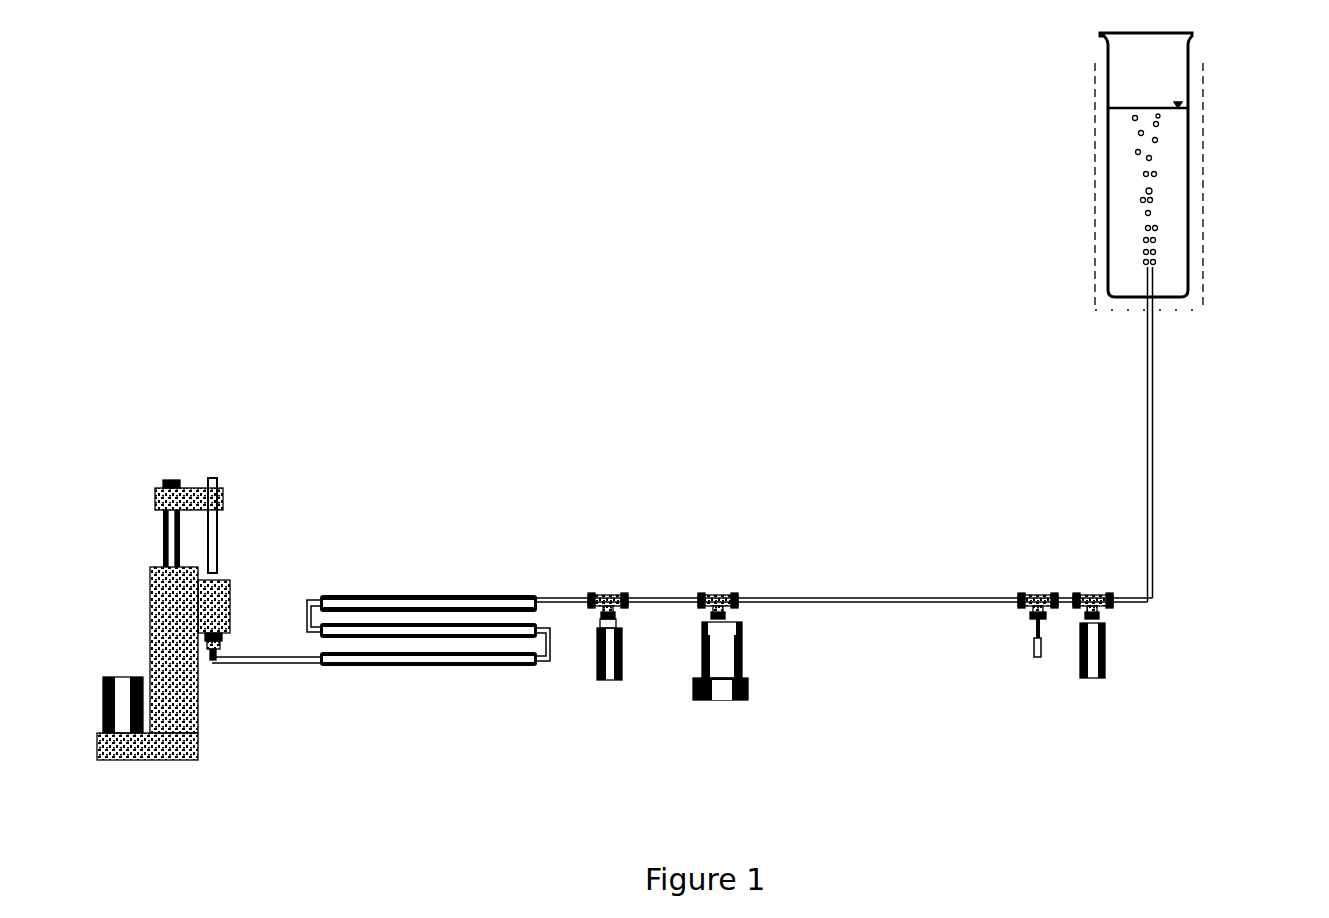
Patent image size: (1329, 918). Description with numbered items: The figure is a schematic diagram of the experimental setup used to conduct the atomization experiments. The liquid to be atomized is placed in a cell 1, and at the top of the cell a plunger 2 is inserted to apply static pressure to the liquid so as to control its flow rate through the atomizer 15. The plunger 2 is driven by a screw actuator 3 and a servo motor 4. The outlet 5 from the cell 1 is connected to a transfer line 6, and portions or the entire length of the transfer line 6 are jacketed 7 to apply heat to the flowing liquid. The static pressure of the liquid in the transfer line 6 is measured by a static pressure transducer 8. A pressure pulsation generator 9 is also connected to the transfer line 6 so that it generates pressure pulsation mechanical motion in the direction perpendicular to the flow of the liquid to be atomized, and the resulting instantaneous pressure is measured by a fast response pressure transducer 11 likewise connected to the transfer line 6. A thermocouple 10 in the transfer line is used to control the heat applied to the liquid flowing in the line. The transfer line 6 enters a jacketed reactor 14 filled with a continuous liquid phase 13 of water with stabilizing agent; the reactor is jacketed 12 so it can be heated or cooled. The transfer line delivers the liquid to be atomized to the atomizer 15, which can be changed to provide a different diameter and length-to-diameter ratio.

The cell 1 is at (232, 588).
The plunger 2 is at (215, 543).
The screw actuator 3 is at (150, 593).
The servo motor 4 is at (117, 672).
The outlet 5 is at (245, 673).
The transfer line 6 is at (563, 587).
The jacket 7 is at (418, 598).
The static pressure transducer 8 is at (607, 690).
The pressure pulsation generator 9 is at (755, 712).
The thermocouple 10 is at (1033, 663).
The fast response pressure transducer 11 is at (1085, 680).
The jacket 12 is at (1197, 128).
The continuous liquid phase 13 is at (1157, 193).
The jacketed reactor 14 is at (1177, 233).
The atomizer 15 is at (1157, 268).